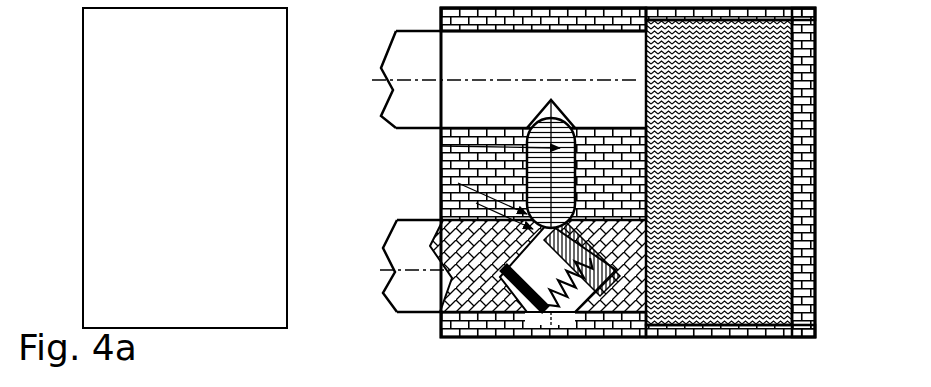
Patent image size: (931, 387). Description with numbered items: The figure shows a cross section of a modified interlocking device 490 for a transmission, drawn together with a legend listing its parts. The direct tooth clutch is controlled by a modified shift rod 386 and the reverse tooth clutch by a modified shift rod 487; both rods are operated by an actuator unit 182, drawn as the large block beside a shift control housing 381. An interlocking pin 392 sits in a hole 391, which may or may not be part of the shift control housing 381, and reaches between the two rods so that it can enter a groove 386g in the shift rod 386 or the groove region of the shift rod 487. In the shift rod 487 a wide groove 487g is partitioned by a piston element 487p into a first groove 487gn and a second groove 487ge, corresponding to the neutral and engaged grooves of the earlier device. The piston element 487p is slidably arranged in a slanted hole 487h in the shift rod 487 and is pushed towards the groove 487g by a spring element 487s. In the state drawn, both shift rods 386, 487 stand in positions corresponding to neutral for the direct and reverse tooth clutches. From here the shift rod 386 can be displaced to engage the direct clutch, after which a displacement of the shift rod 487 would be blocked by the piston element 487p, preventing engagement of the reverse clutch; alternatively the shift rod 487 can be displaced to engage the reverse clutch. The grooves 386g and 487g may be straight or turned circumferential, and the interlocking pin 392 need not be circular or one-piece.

The interlocking device 490 is at (148, 55).
The actuator unit 182 is at (628, 172).
The shift control housing 381 is at (440, 18).
The shift rod 386 is at (509, 79).
The groove 386g is at (540, 112).
The hole 391 is at (522, 133).
The interlocking pin 392 is at (441, 146).
The shift rod 487 is at (398, 312).
The wide groove 487g is at (603, 220).
The second groove 487ge is at (458, 183).
The first groove 487gn is at (476, 203).
The piston element 487p is at (497, 260).
The spring element 487s is at (540, 281).
The slanted hole 487h is at (482, 303).